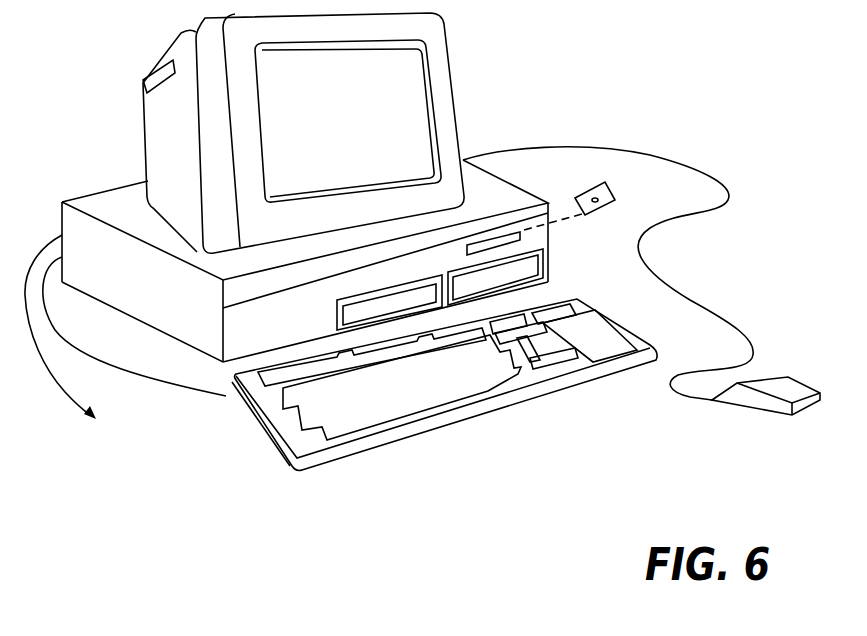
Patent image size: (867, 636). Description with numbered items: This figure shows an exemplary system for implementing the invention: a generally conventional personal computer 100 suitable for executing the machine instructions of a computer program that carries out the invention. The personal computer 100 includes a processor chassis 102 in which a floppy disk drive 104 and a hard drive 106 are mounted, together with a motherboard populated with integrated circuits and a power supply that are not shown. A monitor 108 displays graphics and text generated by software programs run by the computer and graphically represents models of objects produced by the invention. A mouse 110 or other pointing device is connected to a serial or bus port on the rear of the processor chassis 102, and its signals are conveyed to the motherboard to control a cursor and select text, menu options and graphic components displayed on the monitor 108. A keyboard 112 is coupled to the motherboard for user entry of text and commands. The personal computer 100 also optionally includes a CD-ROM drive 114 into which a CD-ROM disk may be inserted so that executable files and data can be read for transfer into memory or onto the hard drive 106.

The personal computer 100 is at (444, 266).
The processor chassis 102 is at (528, 229).
The floppy disk drive 104 is at (508, 232).
The hard drive 106 is at (517, 266).
The monitor 108 is at (452, 77).
The mouse 110 is at (792, 415).
The keyboard 112 is at (540, 398).
The CD-ROM drive 114 is at (337, 316).